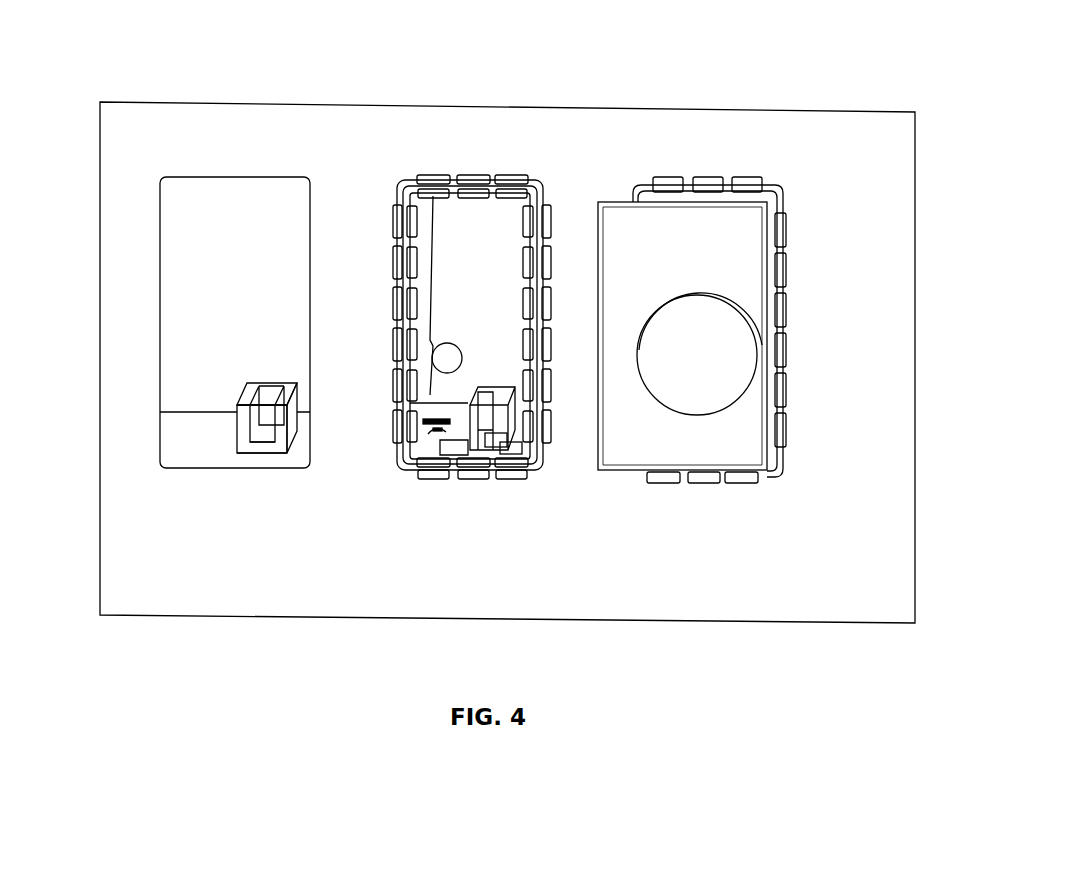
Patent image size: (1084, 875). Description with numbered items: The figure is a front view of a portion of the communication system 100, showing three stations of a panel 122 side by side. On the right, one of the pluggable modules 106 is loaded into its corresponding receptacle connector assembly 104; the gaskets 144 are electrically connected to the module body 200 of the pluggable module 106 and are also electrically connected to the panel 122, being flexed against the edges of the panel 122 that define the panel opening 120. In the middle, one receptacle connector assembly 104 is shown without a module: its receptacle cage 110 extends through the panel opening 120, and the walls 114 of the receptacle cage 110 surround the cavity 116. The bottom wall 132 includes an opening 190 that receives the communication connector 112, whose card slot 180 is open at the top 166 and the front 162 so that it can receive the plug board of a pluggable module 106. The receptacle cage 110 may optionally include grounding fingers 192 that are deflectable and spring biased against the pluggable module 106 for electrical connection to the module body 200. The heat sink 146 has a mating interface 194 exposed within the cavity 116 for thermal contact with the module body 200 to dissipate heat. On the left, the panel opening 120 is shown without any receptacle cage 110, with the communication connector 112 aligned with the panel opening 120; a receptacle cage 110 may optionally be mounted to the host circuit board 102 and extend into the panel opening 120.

The communication system 100 is at (697, 70).
The host circuit board 102 is at (175, 435).
The receptacle connector assembly 104 is at (552, 182).
The pluggable module 106 is at (735, 425).
The receptacle cage 110 is at (487, 213).
The communication connector 112 is at (237, 393).
The walls 114 is at (427, 432).
The cavity 116 is at (495, 455).
The panel opening 120 is at (238, 195).
The panel 122 is at (294, 122).
The bottom wall 132 is at (420, 413).
The gaskets 144 is at (390, 262).
The heat sink 146 is at (453, 277).
The front 162 is at (252, 448).
The top 166 is at (243, 383).
The card slot 180 is at (263, 432).
The opening 190 is at (513, 457).
The grounding fingers 192 is at (482, 447).
The mating interface 194 is at (430, 232).
The module body 200 is at (700, 222).